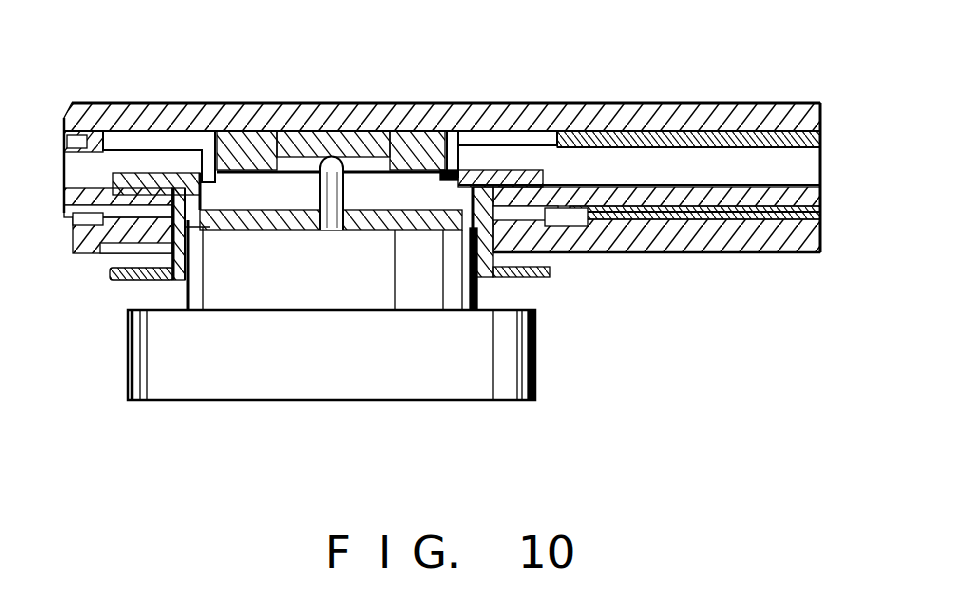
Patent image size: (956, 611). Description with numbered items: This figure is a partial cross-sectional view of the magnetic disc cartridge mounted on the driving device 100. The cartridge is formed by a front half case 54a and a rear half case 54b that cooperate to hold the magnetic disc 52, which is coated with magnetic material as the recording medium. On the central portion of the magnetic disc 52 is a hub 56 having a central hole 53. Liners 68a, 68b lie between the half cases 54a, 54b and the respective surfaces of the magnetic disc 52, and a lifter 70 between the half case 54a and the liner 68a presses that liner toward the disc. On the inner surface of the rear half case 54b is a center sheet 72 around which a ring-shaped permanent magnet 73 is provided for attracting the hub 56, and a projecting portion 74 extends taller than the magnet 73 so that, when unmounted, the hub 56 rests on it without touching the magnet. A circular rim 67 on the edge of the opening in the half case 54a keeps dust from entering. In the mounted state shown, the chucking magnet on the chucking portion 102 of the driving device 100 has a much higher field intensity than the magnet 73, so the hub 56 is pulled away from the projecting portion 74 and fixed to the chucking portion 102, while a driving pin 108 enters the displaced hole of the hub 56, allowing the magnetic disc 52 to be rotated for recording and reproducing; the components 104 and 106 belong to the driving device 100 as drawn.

The magnetic disc 52 is at (723, 183).
The central hole 53 is at (318, 157).
The front half case 54a is at (648, 222).
The rear half case 54b is at (142, 103).
The hub 56 is at (540, 131).
The circular rim 67 is at (132, 280).
The liner 68a is at (600, 206).
The liner 68b is at (668, 133).
The lifter 70 is at (752, 214).
The center sheet 72 is at (352, 133).
The ring-shaped permanent magnet 73 is at (240, 133).
The projecting portion 74 is at (208, 140).
The driving device 100 is at (543, 393).
The chucking portion 102 is at (265, 298).
The motor housing 104 is at (377, 383).
The mounting plate 106 is at (315, 172).
The driving pin 108 is at (460, 170).